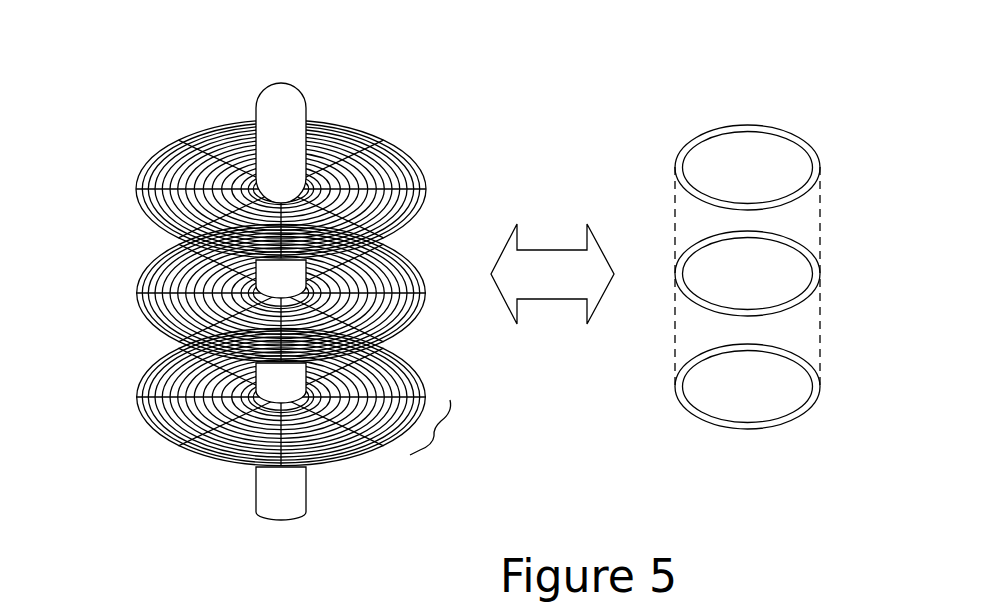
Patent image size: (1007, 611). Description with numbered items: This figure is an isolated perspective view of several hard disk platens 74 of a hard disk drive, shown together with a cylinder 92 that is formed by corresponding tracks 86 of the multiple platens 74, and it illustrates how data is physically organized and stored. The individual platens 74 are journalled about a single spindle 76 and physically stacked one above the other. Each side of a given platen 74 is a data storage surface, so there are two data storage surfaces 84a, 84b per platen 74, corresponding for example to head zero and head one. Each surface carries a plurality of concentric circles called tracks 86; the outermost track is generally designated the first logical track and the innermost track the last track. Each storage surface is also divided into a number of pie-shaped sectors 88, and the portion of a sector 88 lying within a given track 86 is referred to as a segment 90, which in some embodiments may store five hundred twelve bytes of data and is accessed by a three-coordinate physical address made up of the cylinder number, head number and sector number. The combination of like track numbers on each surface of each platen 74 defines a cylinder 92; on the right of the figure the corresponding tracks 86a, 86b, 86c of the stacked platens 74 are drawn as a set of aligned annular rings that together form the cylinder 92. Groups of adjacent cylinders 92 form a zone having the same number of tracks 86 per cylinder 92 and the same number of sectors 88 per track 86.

The hard disk platen 74 is at (273, 279).
The spindle 76 is at (296, 83).
The data storage surface 84a is at (142, 148).
The data storage surface 84b is at (142, 226).
The track 86 is at (376, 170).
The sector 88 is at (437, 435).
The segment 90 is at (162, 387).
The cylinder 92 is at (717, 239).
The track 86a is at (690, 147).
The track 86b is at (700, 240).
The track 86c is at (705, 353).